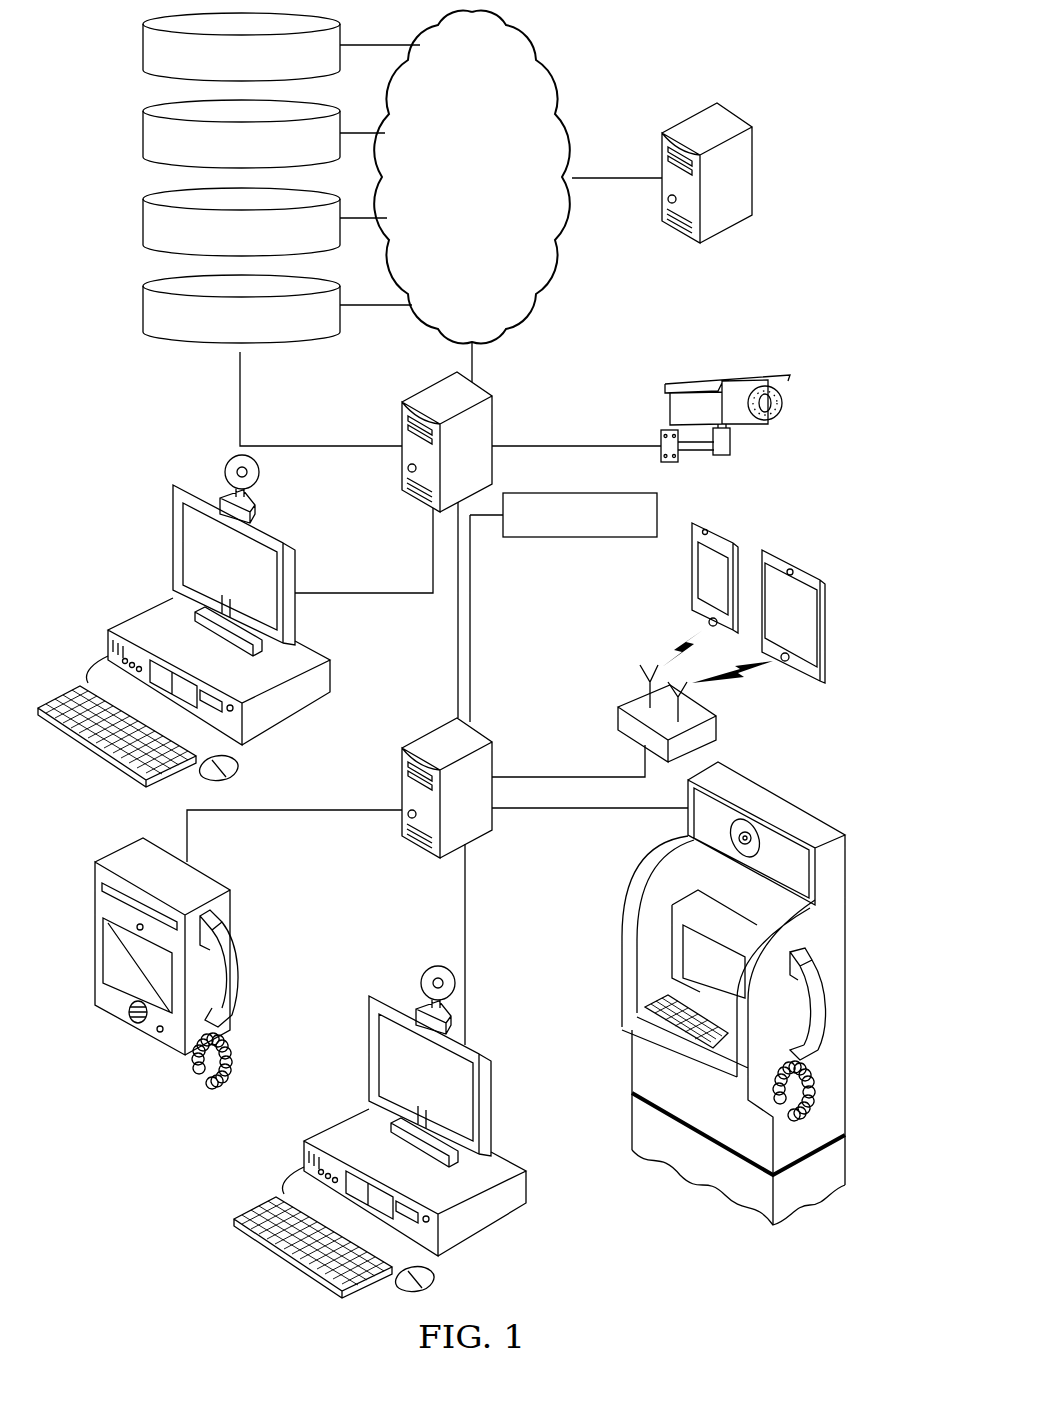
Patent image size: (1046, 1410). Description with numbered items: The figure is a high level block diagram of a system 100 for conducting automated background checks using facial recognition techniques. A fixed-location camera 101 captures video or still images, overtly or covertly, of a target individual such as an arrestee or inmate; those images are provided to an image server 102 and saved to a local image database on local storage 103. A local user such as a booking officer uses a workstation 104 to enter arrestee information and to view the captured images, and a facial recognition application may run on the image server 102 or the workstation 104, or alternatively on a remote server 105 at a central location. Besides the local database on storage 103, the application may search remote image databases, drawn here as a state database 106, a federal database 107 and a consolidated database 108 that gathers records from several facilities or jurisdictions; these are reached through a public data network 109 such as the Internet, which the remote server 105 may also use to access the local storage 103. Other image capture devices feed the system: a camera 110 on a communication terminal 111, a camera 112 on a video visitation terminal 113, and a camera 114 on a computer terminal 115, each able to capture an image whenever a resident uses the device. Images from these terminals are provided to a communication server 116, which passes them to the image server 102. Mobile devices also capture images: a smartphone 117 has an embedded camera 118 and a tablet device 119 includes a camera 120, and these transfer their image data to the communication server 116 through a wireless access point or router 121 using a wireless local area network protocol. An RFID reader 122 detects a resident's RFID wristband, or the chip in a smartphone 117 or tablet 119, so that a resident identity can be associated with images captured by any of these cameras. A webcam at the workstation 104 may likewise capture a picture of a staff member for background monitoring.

The system 100 is at (797, 47).
The camera 101 is at (763, 375).
The image server 102 is at (432, 385).
The local storage 103 is at (143, 295).
The workstation 104 is at (184, 614).
The remote server 105 is at (733, 115).
The state database 106 is at (143, 33).
The federal database 107 is at (143, 120).
The consolidated database 108 is at (143, 208).
The public data network 109 is at (492, 193).
The camera on communication terminal 110 is at (107, 915).
The communication terminal 111 is at (132, 949).
The camera on video visitation terminal 112 is at (748, 822).
The video visitation terminal 113 is at (741, 986).
The camera on computer terminal 114 is at (423, 977).
The computer terminal 115 is at (380, 1126).
The communication server 116 is at (418, 852).
The smartphone 117 is at (227, 467).
The embedded camera 118 is at (717, 530).
The tablet device 119 is at (831, 603).
The camera 120 is at (797, 563).
The wireless access point or router 121 is at (617, 712).
The RFID reader 122 is at (580, 540).